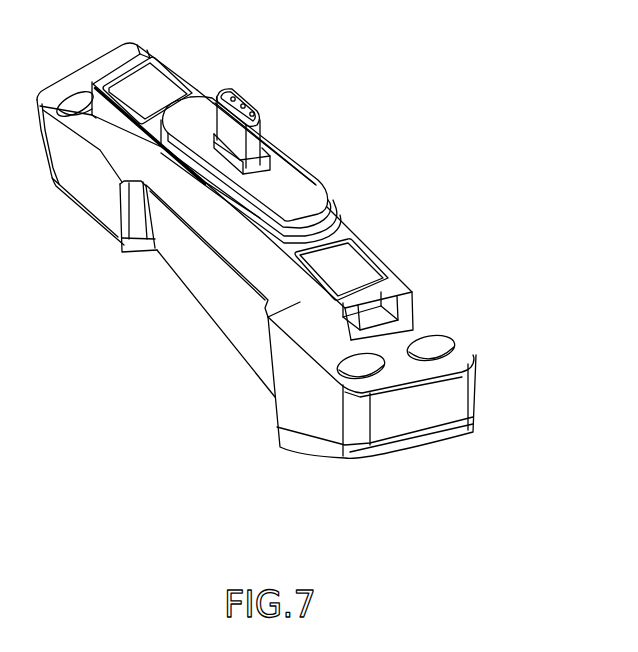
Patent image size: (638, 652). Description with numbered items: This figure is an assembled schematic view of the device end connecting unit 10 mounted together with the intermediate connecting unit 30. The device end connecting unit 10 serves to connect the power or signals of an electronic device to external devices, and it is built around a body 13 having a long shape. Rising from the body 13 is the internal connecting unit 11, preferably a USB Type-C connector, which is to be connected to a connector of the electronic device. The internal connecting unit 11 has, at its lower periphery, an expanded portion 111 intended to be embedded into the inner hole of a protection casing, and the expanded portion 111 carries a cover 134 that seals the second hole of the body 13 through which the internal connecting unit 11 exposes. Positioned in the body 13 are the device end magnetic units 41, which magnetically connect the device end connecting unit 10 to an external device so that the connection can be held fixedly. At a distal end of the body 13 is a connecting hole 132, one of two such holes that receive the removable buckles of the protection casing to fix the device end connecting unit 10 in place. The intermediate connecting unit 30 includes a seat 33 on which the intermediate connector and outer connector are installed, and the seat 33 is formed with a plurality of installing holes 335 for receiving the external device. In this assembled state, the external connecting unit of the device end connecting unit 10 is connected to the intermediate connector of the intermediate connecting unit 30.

The device end connecting unit 10 is at (197, 87).
The internal connecting unit 11 is at (258, 122).
The expanded portion 111 is at (285, 157).
The body 13 is at (348, 230).
The cover 134 is at (292, 188).
The connecting hole 132 is at (393, 320).
The intermediate connecting unit 30 is at (237, 337).
The seat 33 is at (293, 410).
The installing hole 335 is at (437, 347).
The device end magnetic unit 41 is at (158, 80).